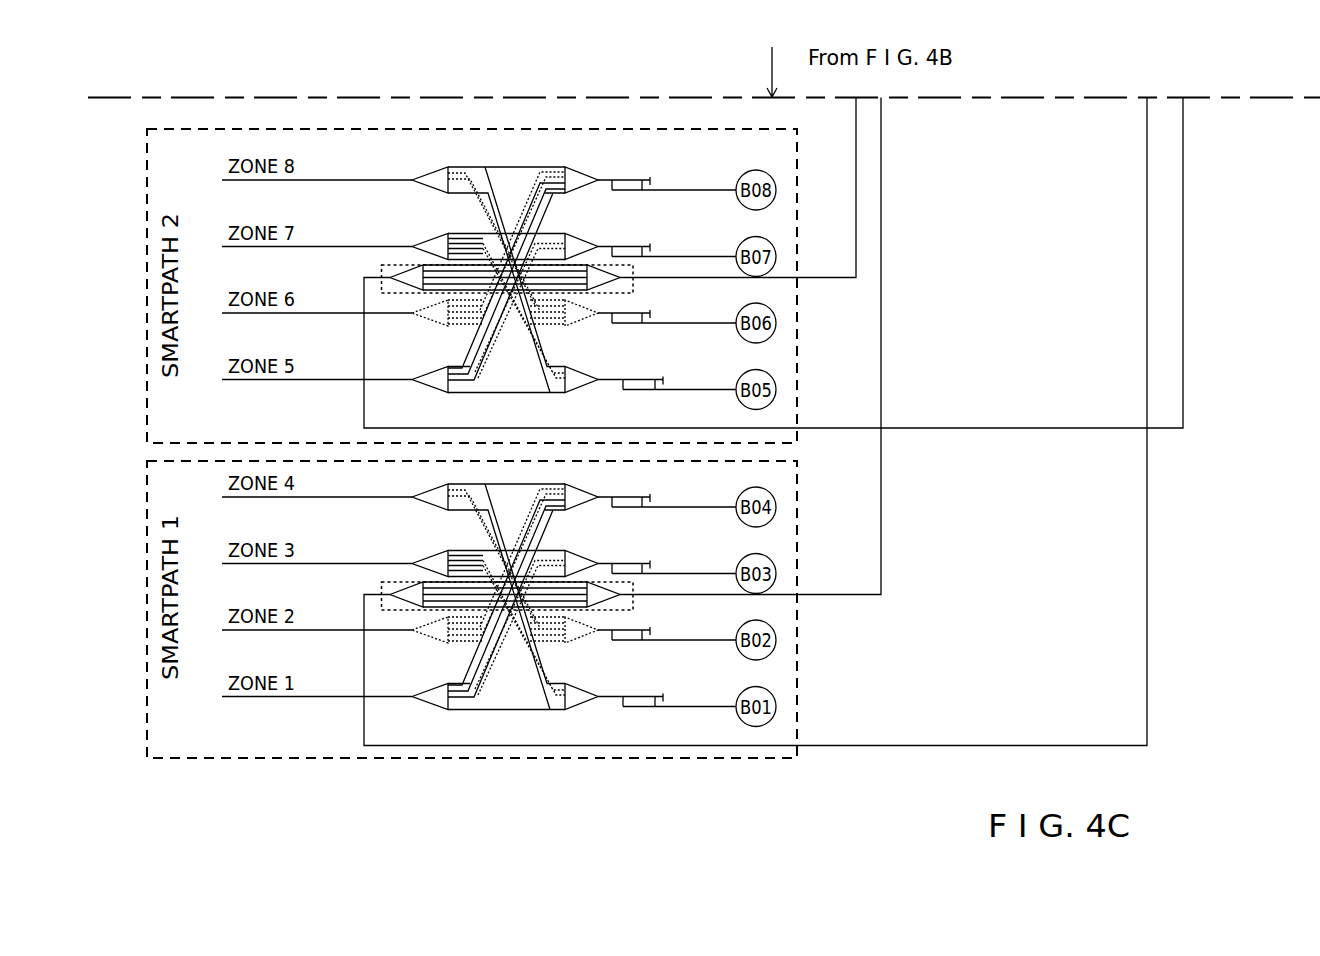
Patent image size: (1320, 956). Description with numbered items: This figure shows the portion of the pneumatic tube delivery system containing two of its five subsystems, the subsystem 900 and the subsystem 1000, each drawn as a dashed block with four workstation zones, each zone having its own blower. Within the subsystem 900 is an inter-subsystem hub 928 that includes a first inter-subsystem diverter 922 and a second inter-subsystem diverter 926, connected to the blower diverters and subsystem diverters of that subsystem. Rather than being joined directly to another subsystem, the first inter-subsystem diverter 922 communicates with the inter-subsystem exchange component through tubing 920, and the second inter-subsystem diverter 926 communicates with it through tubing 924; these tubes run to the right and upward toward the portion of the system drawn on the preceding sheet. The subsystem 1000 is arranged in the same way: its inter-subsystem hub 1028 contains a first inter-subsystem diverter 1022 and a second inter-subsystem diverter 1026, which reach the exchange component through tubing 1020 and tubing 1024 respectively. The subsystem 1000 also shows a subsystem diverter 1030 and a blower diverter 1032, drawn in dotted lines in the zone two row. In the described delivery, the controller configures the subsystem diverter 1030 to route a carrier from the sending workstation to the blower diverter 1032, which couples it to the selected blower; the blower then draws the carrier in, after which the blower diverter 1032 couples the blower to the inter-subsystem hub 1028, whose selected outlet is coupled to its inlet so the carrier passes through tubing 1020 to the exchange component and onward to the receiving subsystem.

The subsystem 900 is at (147, 205).
The tubing 920 is at (818, 428).
The first inter-subsystem diverter 922 is at (603, 280).
The tubing 924 is at (808, 278).
The second inter-subsystem diverter 926 is at (410, 279).
The inter-subsystem hub 928 is at (400, 265).
The subsystem 1000 is at (147, 505).
The tubing 1020 is at (815, 746).
The first inter-subsystem diverter 1022 is at (600, 596).
The tubing 1024 is at (823, 595).
The second inter-subsystem diverter 1026 is at (411, 597).
The inter-subsystem hub 1028 is at (400, 582).
The subsystem diverter 1030 is at (438, 633).
The blower diverter 1032 is at (573, 632).